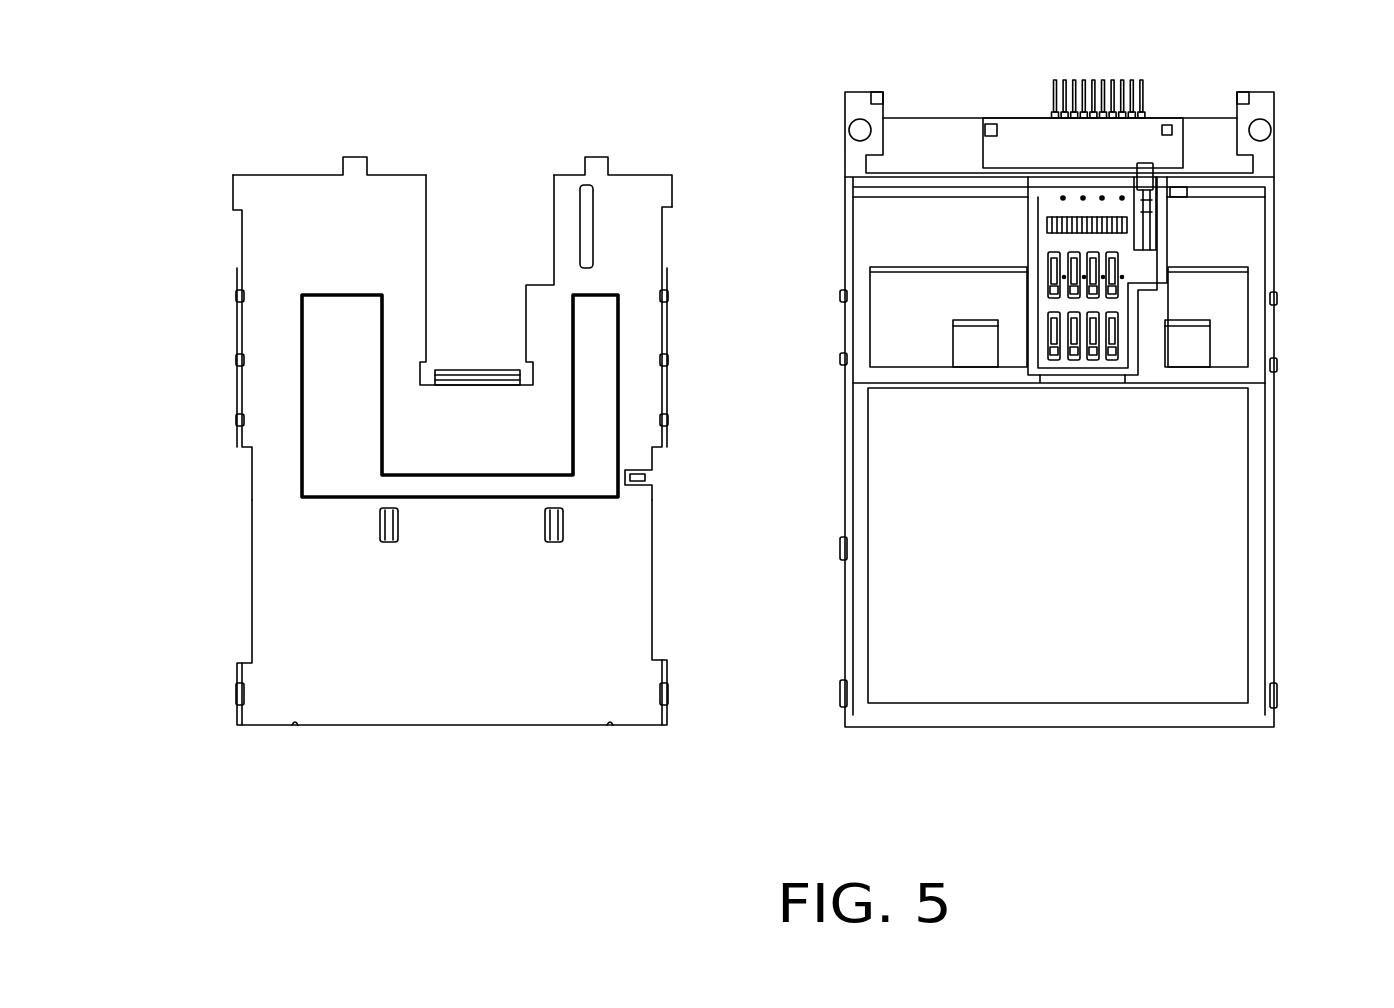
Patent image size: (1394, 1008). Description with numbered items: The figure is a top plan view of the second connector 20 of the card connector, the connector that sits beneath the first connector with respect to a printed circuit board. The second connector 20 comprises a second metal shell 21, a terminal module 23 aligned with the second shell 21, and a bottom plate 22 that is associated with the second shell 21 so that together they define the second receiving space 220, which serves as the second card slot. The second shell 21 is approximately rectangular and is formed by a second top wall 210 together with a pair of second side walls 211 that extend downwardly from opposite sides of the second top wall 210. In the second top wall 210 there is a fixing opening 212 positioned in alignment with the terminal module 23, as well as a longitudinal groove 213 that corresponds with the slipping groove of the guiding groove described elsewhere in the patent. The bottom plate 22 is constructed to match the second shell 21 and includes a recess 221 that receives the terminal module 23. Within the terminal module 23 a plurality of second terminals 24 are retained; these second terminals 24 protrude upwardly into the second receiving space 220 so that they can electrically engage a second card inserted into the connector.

The second connector 20 is at (1268, 78).
The second metal shell 21 is at (278, 582).
The second top wall 210 is at (460, 685).
The second side walls 211 is at (668, 390).
The fixing opening 212 is at (480, 283).
The longitudinal groove 213 is at (588, 212).
The bottom plate 22 is at (1235, 380).
The second receiving space 220 is at (1097, 673).
The recess 221 is at (1165, 245).
The terminal module 23 is at (1058, 188).
The second terminals 24 is at (1057, 277).